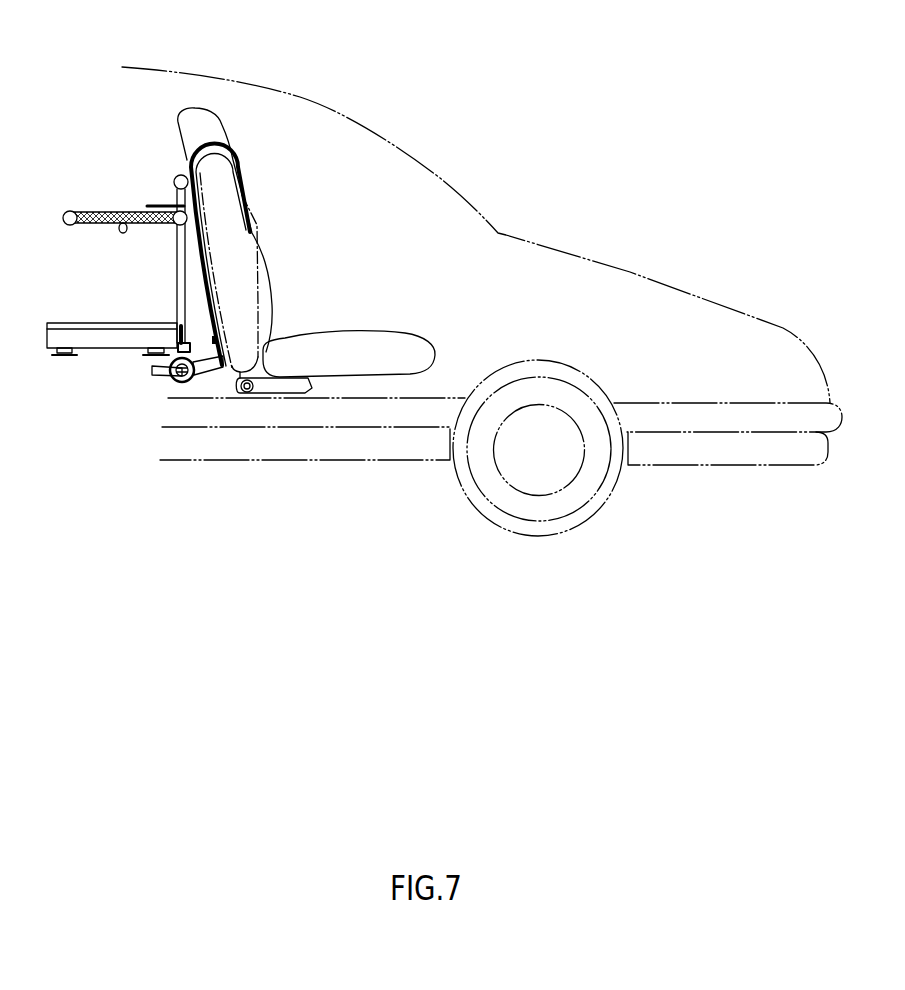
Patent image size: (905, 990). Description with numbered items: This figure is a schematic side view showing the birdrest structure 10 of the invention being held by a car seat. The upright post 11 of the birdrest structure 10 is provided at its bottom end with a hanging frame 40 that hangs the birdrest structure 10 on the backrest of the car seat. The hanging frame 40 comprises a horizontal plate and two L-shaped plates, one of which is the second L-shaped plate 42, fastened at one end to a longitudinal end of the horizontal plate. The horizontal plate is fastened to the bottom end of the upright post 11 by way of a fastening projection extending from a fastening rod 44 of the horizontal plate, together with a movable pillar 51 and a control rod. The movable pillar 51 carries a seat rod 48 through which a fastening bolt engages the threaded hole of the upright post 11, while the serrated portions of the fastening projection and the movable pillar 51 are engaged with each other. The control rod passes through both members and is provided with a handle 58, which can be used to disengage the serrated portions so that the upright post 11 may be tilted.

The birdrest structure 10 is at (95, 200).
The upright post 11 is at (178, 268).
The hanging frame 40 is at (218, 258).
The second L-shaped plate 42 is at (212, 150).
The fastening rod 44 is at (210, 368).
The seat rod 48 is at (186, 348).
The movable pillar 51 is at (182, 384).
The handle 58 is at (160, 375).